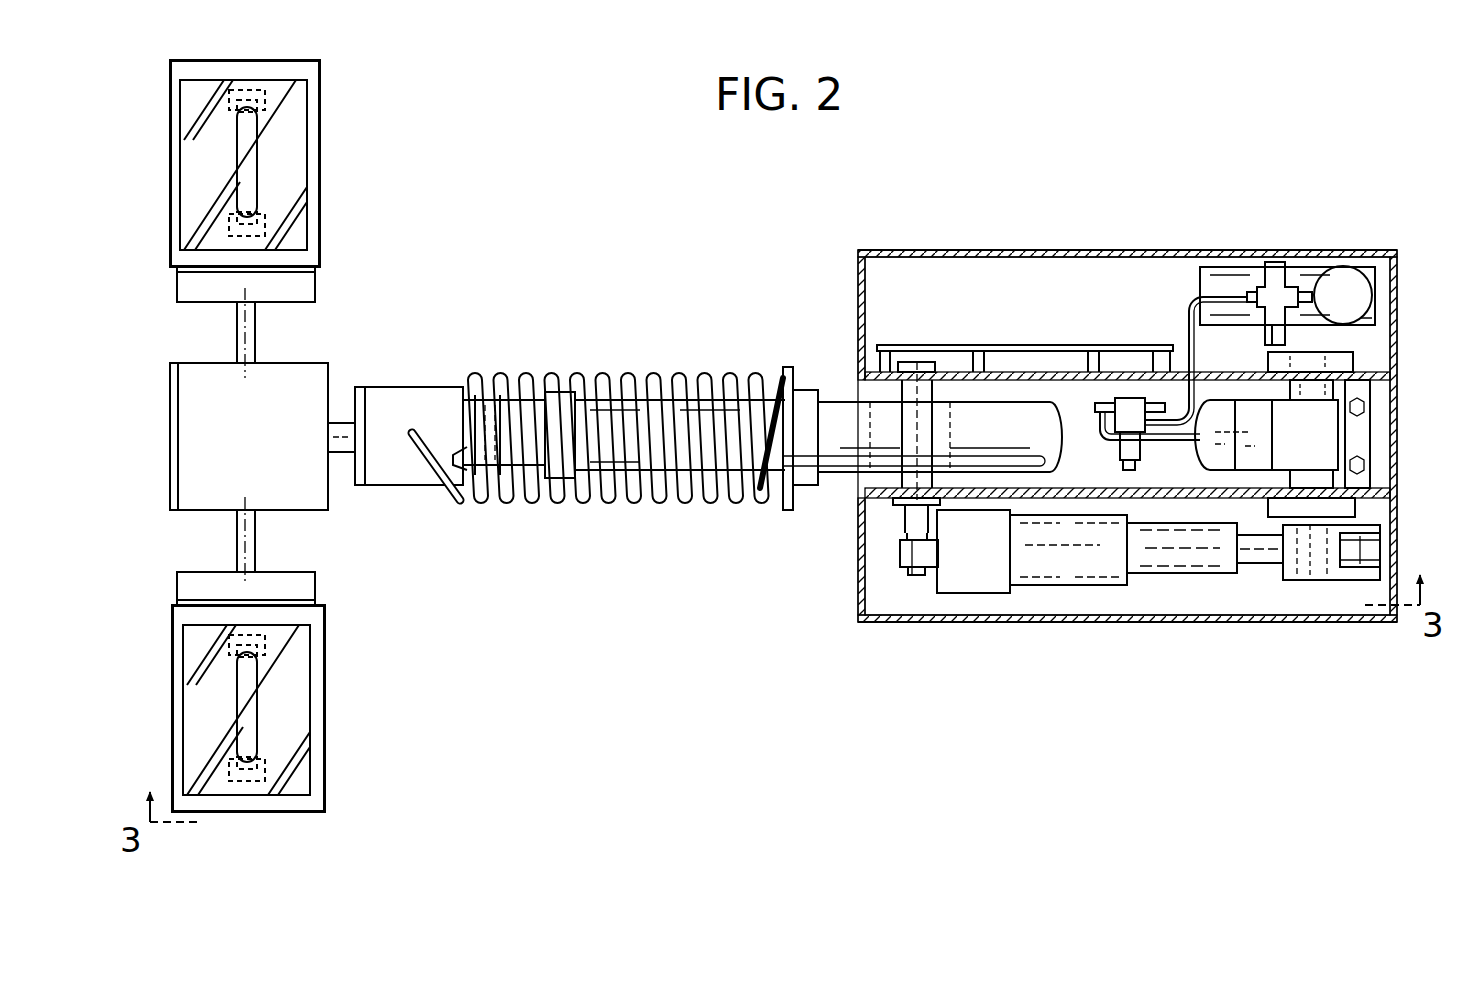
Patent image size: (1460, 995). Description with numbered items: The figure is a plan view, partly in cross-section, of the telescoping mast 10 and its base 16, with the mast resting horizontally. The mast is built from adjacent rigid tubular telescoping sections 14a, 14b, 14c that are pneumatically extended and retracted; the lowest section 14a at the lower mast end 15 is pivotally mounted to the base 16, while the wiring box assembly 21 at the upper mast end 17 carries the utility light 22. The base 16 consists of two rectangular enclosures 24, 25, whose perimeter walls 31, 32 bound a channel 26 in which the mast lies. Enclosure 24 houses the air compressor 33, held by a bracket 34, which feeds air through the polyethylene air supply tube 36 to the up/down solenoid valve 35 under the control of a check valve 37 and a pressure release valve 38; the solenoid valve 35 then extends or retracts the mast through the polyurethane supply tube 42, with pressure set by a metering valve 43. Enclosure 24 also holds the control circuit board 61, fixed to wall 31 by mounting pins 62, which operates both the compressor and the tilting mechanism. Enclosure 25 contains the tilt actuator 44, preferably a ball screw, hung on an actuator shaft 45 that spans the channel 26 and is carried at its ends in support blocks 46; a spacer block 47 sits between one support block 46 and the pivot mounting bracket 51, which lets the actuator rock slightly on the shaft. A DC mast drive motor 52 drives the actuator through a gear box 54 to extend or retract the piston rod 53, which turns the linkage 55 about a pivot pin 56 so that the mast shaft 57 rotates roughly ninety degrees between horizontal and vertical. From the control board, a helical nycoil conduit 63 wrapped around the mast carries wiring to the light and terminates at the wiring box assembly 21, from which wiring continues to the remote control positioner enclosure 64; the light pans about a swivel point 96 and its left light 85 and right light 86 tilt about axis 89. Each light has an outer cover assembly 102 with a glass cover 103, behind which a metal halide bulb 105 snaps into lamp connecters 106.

The telescoping mast 10 is at (652, 358).
The telescoping section 14a is at (840, 413).
The telescoping section 14b is at (520, 470).
The telescoping section 14c is at (455, 440).
The lower mast end 15 is at (1212, 415).
The base 16 is at (1128, 246).
The upper mast end 17 is at (487, 405).
The wiring box assembly 21 is at (390, 398).
The utility light 22 is at (357, 243).
The rectangular enclosure 24 is at (1016, 256).
The rectangular enclosure 25 is at (1025, 614).
The channel 26 is at (865, 478).
The perimeter wall 31 is at (952, 248).
The perimeter wall 32 is at (935, 621).
The air compressor 33 is at (1232, 268).
The bracket 34 is at (1275, 265).
The up/down solenoid valve 35 is at (1120, 396).
The air supply tube 36 is at (1192, 300).
The check valve 37 is at (1298, 290).
The pressure release valve 38 is at (1284, 332).
The supply tube 42 is at (1155, 442).
The metering valve 43 is at (1157, 400).
The tilt actuator 44 is at (1145, 590).
The actuator shaft 45 is at (905, 577).
The support block 46 is at (885, 370).
The spacer block 47 is at (906, 520).
The pivot mounting bracket 51 is at (905, 557).
The DC mast drive motor 52 is at (1087, 563).
The piston rod 53 is at (1268, 577).
The mounting block 54 is at (975, 585).
The linkage 55 is at (1365, 522).
The pivot pin 56 is at (1372, 545).
The mast shaft 57 is at (1320, 580).
The control circuit board 61 is at (1020, 345).
The mounting pins 62 is at (977, 358).
The nycoil conduit 63 is at (707, 375).
The remote control positioner enclosure 64 is at (283, 378).
The left light 85 is at (325, 712).
The right light 86 is at (323, 143).
The axis 89 is at (245, 322).
The swivel point 96 is at (345, 455).
The outer cover assembly 102 is at (322, 80).
The glass cover 103 is at (298, 212).
The bulb 105 is at (243, 145).
The lamp connecters 106 is at (268, 645).